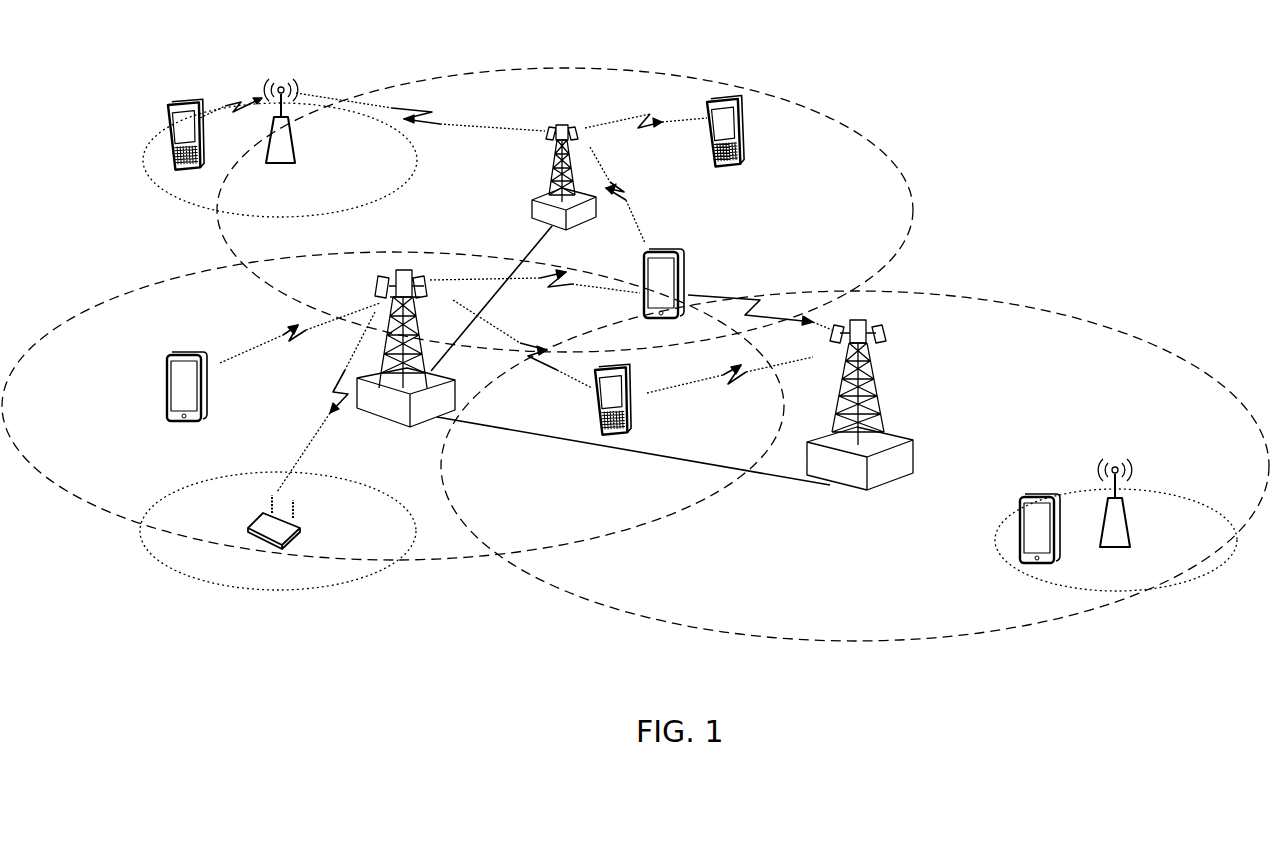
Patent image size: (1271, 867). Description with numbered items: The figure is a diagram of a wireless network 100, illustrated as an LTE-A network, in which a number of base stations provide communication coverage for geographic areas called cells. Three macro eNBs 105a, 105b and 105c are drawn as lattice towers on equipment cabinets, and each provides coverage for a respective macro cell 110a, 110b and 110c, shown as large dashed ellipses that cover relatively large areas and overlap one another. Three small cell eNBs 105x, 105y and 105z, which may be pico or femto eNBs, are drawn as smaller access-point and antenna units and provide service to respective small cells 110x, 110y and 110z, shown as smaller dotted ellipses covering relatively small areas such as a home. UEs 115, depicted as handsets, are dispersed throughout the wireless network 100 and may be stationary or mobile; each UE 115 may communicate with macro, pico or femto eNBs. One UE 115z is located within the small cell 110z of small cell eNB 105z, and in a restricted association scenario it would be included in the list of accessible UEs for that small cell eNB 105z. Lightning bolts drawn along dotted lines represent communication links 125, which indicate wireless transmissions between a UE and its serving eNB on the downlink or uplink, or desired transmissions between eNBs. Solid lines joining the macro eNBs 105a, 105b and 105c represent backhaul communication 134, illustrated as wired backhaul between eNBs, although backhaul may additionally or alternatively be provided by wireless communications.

The wireless network 100 is at (1058, 66).
The macro eNB 105a is at (366, 418).
The macro eNB 105b is at (534, 203).
The macro eNB 105c is at (893, 478).
The small cell eNB 105x is at (298, 536).
The small cell eNB 105y is at (296, 164).
The small cell eNB 105z is at (1130, 547).
The macro cell 110a is at (180, 277).
The macro cell 110b is at (694, 63).
The macro cell 110c is at (1110, 326).
The small cell 110x is at (224, 594).
The small cell 110y is at (142, 176).
The small cell 110z is at (1208, 586).
The UE 115 is at (172, 112).
The UE 115z is at (1018, 504).
The communication links 125 is at (238, 100).
The backhaul communication 134 is at (538, 248).